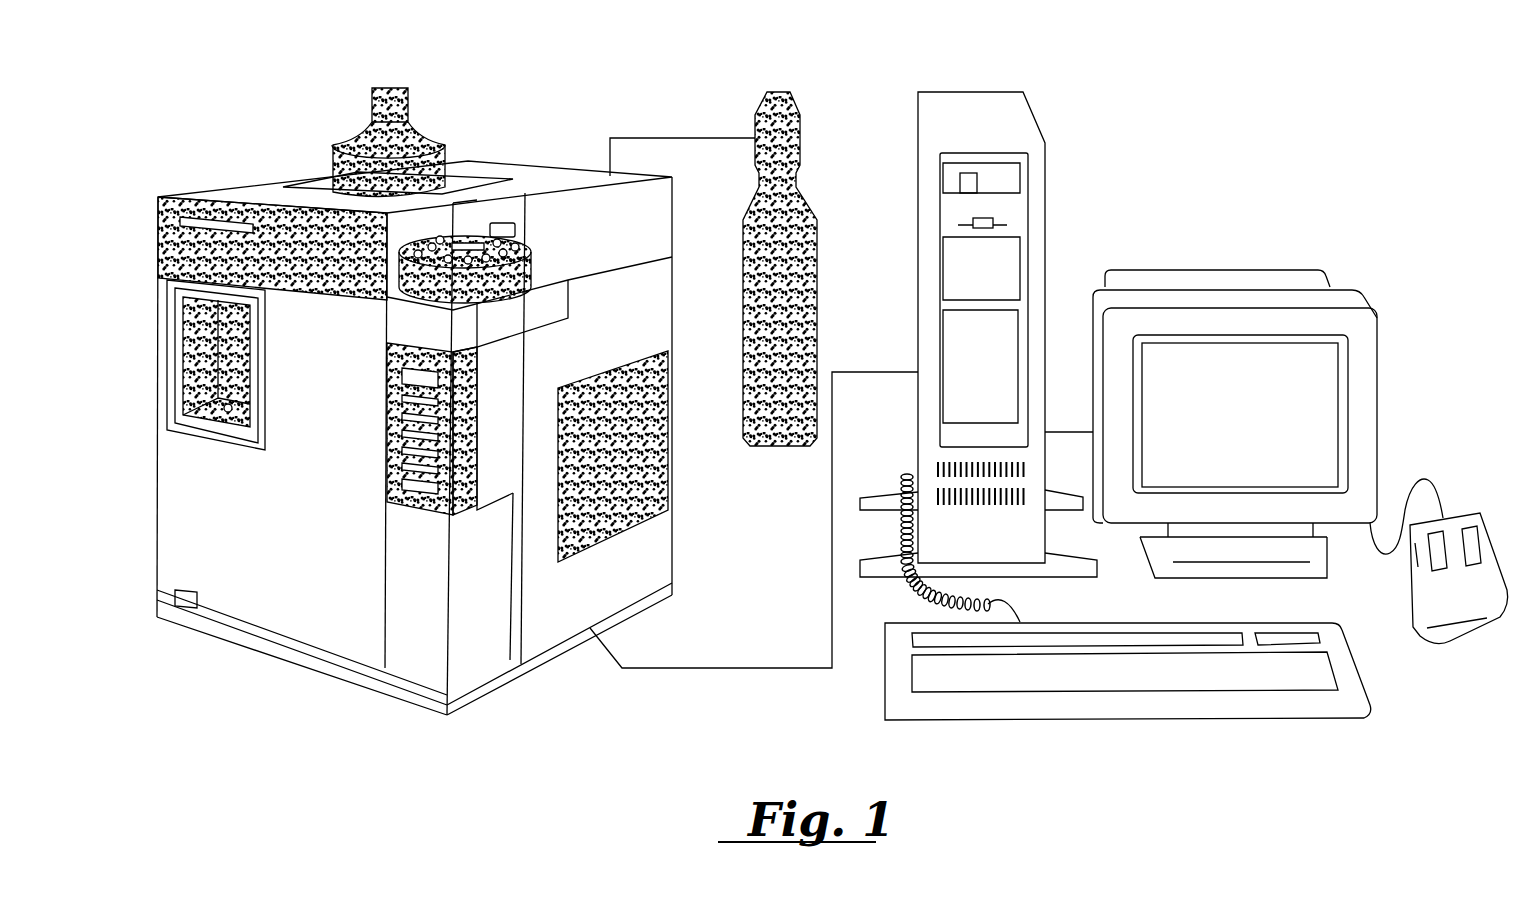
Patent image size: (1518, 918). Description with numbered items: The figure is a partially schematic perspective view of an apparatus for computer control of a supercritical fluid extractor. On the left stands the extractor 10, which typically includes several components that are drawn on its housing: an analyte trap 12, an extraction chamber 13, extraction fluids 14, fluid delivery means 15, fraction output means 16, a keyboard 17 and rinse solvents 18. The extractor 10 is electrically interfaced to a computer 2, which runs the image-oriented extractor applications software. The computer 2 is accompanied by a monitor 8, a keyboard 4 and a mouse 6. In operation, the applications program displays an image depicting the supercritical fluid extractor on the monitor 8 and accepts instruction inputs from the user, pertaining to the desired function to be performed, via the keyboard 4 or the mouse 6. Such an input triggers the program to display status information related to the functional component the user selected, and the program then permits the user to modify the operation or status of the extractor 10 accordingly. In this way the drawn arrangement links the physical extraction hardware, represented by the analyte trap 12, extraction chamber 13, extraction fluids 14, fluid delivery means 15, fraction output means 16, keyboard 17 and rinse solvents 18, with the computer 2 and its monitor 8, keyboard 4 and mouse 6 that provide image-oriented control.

The computer 2 is at (1061, 102).
The keyboard 4 is at (1245, 733).
The mouse 6 is at (1458, 662).
The monitor 8 is at (1397, 287).
The extractor 10 is at (415, 725).
The analyte trap 12 is at (139, 236).
The extraction chamber 13 is at (148, 422).
The extraction fluids 14 is at (821, 161).
The fluid delivery means 15 is at (691, 460).
The fraction output means 16 is at (545, 259).
The keyboard 17 is at (369, 453).
The rinse solvents 18 is at (439, 108).